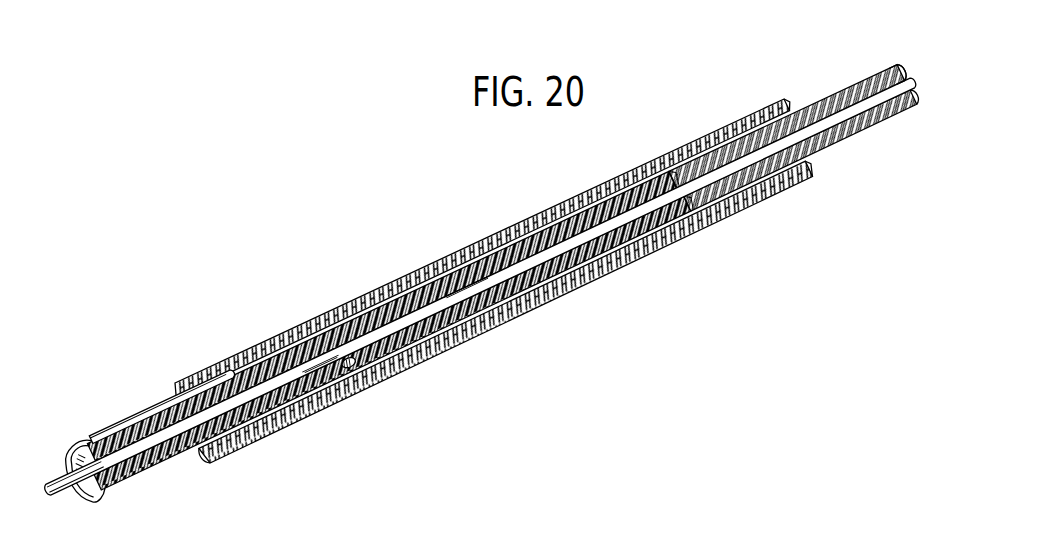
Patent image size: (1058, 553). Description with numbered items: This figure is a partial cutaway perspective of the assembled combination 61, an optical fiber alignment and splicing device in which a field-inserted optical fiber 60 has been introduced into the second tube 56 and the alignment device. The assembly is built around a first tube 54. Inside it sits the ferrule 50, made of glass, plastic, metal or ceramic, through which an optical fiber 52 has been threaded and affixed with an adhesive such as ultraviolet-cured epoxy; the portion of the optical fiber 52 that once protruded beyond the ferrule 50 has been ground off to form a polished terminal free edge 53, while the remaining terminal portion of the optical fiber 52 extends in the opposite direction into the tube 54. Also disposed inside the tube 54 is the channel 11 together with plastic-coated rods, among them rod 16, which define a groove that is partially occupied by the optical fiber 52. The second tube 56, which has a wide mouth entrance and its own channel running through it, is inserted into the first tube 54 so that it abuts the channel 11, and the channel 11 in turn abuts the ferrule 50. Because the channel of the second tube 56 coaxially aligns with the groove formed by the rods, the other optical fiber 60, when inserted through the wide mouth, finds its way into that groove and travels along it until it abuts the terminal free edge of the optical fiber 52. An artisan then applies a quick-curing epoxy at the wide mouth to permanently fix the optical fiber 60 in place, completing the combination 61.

The channel 11 is at (423, 340).
The rod 16 is at (358, 366).
The ferrule 50 is at (838, 82).
The optical fiber 52 is at (908, 88).
The free edge 53 is at (898, 64).
The tube 54 is at (388, 284).
The second tube 56 is at (143, 413).
The optical fiber 60 is at (50, 488).
The combination 61 is at (719, 76).